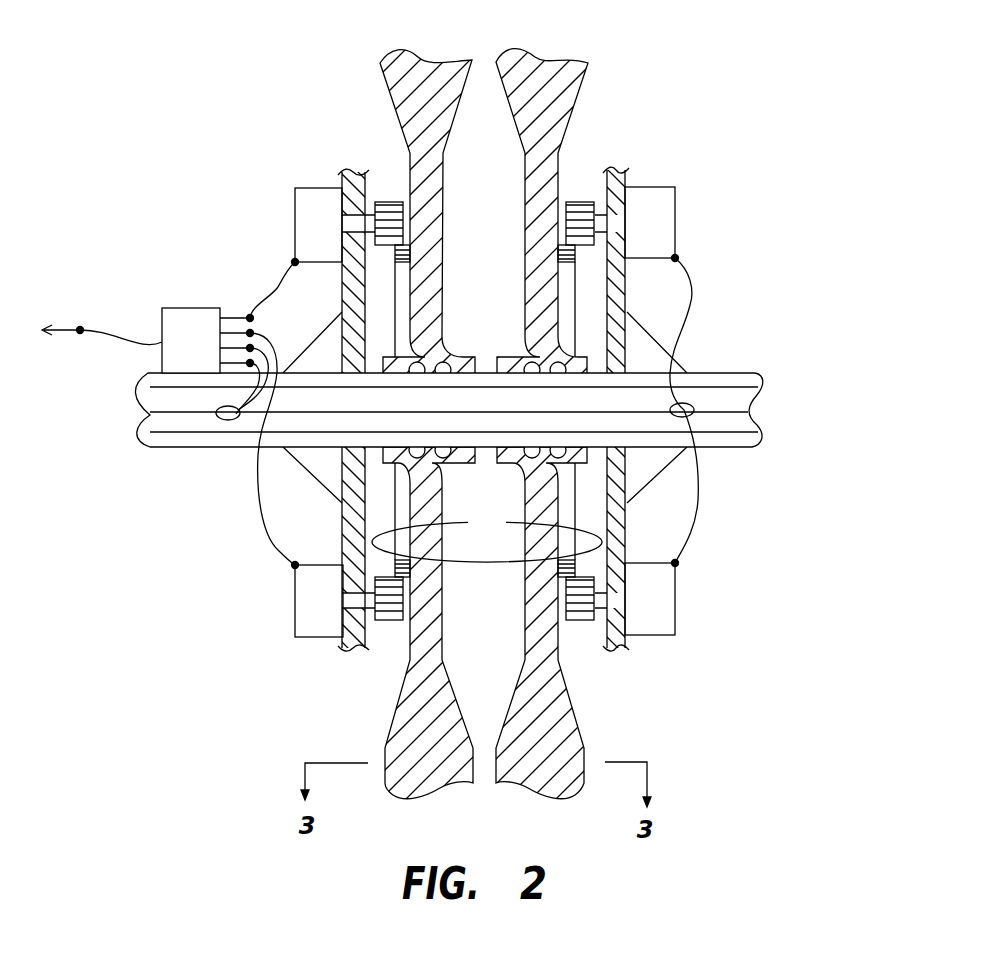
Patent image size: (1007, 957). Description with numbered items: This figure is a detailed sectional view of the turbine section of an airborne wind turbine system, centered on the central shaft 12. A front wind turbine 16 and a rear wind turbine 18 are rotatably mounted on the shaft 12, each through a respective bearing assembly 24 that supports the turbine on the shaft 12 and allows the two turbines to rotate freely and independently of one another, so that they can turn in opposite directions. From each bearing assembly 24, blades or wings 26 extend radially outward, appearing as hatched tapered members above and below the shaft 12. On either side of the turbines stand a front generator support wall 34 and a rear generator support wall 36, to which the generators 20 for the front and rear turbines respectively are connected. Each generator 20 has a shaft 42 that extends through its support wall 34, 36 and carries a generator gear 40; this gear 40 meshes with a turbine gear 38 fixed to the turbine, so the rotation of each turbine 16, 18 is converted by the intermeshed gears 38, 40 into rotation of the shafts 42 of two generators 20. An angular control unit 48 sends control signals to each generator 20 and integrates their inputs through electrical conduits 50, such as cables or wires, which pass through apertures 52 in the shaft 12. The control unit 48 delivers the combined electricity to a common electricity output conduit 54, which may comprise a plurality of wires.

The central shaft 12 is at (715, 364).
The front wind turbine 16 is at (375, 49).
The rear wind turbine 18 is at (597, 56).
The generator 20 is at (340, 188).
The bearing assembly 24 is at (505, 357).
The blades or wings 26 is at (417, 45).
The front generator support wall 34 is at (353, 650).
The rear generator support wall 36 is at (622, 650).
The turbine gear 38 is at (487, 535).
The generator gear 40 is at (398, 202).
The generator shaft 42 is at (376, 202).
The angular control unit 48 is at (207, 308).
The electrical conduits 50 is at (277, 284).
The apertures 52 is at (230, 420).
The common electricity output conduit 54 is at (83, 328).